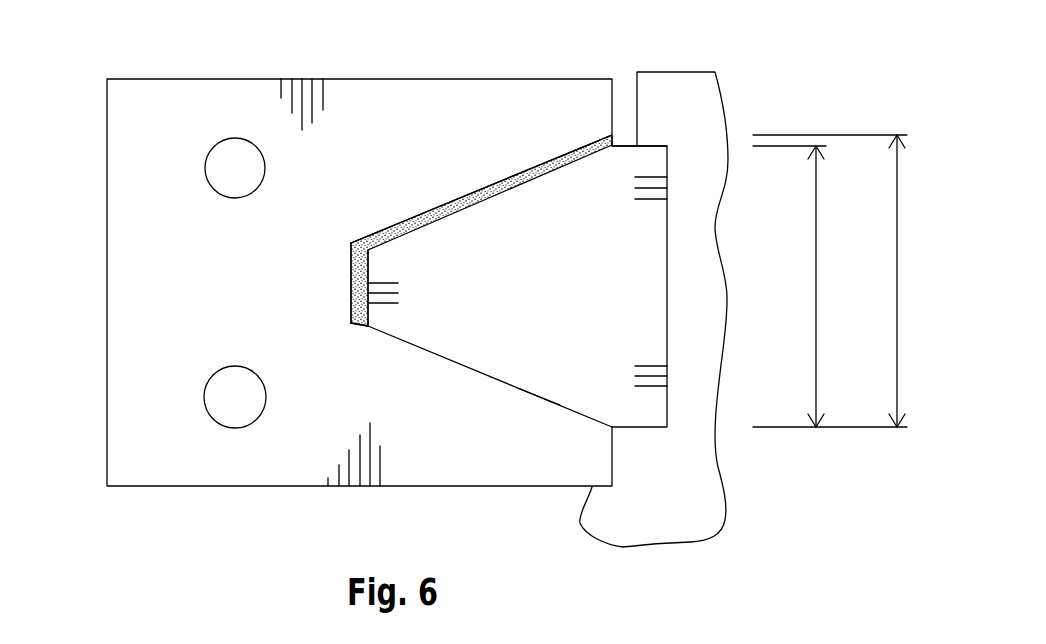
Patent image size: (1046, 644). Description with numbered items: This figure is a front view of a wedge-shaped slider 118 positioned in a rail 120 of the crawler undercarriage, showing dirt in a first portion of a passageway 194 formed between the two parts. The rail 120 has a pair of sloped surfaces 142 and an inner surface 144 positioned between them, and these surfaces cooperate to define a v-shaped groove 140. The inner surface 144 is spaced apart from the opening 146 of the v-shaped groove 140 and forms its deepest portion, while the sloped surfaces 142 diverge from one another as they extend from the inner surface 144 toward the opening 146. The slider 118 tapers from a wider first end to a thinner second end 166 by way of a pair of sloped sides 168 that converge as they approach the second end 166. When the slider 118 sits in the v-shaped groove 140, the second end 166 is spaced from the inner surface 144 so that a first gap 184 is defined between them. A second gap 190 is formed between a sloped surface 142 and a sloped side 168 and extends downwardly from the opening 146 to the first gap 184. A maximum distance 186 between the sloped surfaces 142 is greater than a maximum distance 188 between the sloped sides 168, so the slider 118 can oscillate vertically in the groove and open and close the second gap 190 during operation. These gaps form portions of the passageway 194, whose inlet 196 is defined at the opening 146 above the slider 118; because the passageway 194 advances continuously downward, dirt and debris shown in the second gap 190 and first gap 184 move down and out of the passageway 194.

The rail 120 is at (105, 230).
The slider 118 is at (635, 287).
The second gap 190 is at (513, 177).
The sloped surfaces 142 is at (437, 208).
The sloped sides 168 is at (548, 175).
The inlet 196 is at (613, 142).
The passageway 194 is at (368, 234).
The inner surface 144 is at (350, 265).
The second end 166 is at (368, 266).
The first gap 184 is at (350, 302).
The opening 146 is at (646, 238).
The v-shaped groove 140 is at (588, 330).
The maximum distance 188 is at (816, 262).
The maximum distance 186 is at (897, 290).